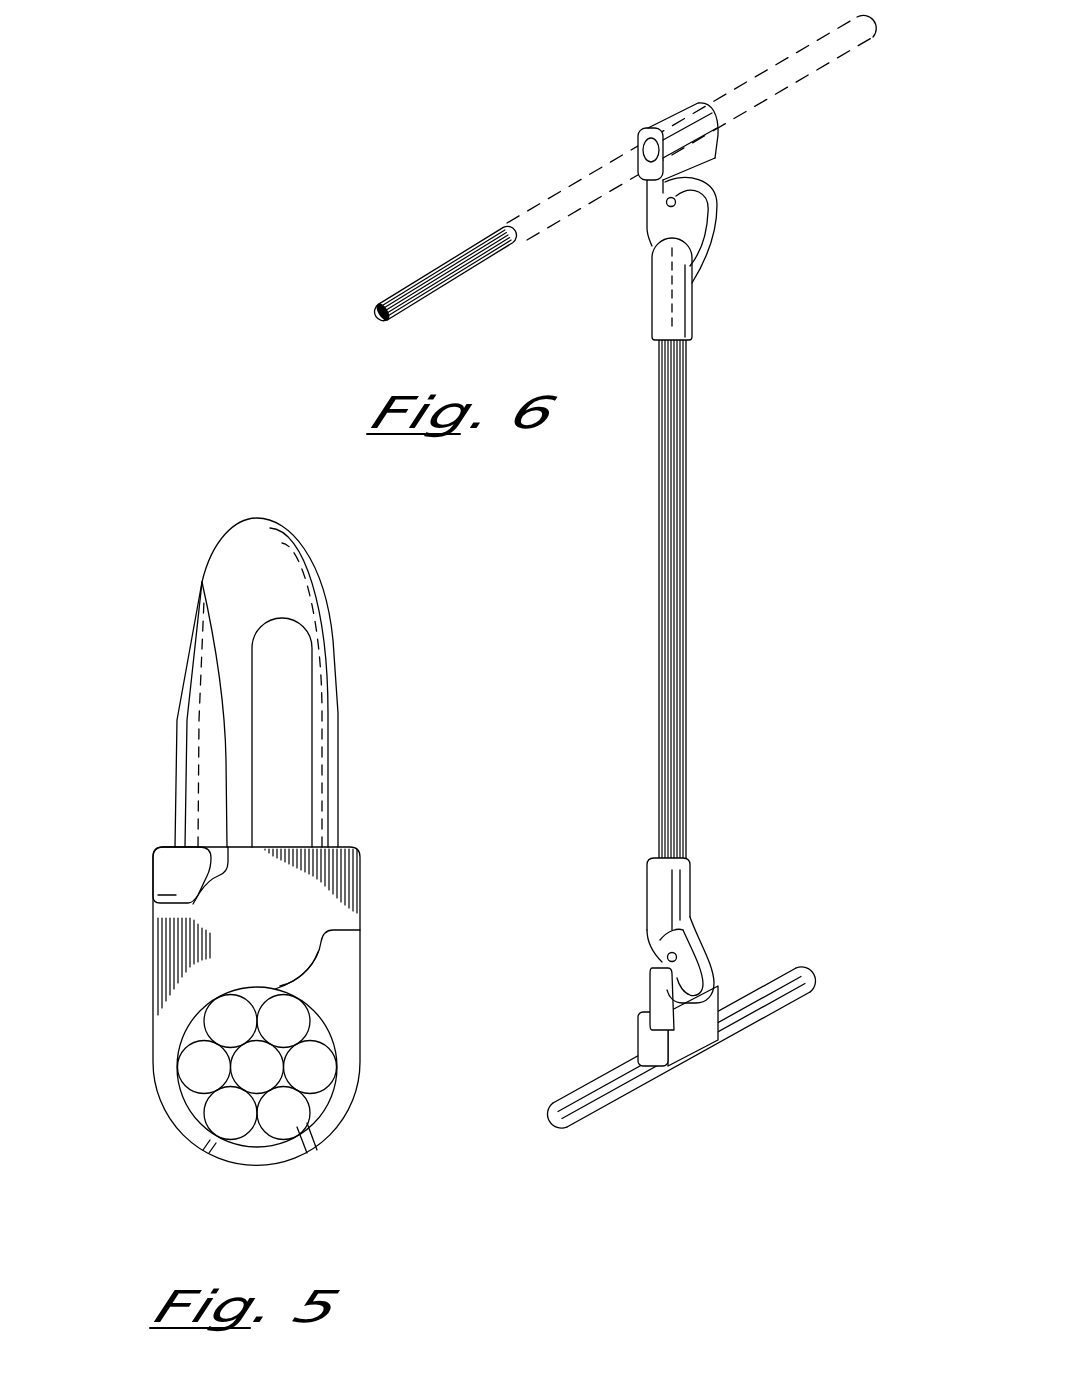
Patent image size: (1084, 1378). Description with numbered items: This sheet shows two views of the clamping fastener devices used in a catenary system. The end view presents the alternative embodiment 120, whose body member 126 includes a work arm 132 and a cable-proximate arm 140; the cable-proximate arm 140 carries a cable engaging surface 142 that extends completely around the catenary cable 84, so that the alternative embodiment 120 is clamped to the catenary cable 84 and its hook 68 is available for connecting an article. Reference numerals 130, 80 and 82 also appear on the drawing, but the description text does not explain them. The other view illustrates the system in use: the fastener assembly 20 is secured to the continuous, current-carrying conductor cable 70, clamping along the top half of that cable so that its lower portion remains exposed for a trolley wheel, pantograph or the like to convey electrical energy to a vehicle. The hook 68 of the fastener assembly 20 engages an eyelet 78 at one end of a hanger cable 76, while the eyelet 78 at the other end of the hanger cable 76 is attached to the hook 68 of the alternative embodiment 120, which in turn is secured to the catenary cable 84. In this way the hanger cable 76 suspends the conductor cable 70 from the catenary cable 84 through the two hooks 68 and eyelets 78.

In FIG. 6, the fastener assembly 20 is at (638, 1016).
In FIG. 5, the hook 68 is at (335, 685).
In FIG. 6, the hook 68 is at (641, 210).
In FIG. 6, the continuous cable 70 is at (794, 1009).
In FIG. 6, the hanger cable 76 is at (684, 591).
In FIG. 6, the eyelet 78 is at (719, 232).
In FIG. 6, the pivot pin 80 is at (676, 203).
In FIG. 6, the cable 82 is at (674, 546).
In FIG. 5, the catenary cable 84 is at (236, 1135).
In FIG. 6, the catenary cable 84 is at (502, 259).
In FIG. 5, the alternative embodiment 120 is at (280, 846).
In FIG. 6, the alternative embodiment 120 is at (670, 124).
In FIG. 5, the body member 126 is at (152, 948).
In FIG. 5, the cable sheath 130 is at (178, 1040).
In FIG. 5, the work arm 132 is at (153, 860).
In FIG. 5, the cable-proximate arm 140 is at (362, 985).
In FIG. 5, the cable engaging surface 142 is at (303, 1113).